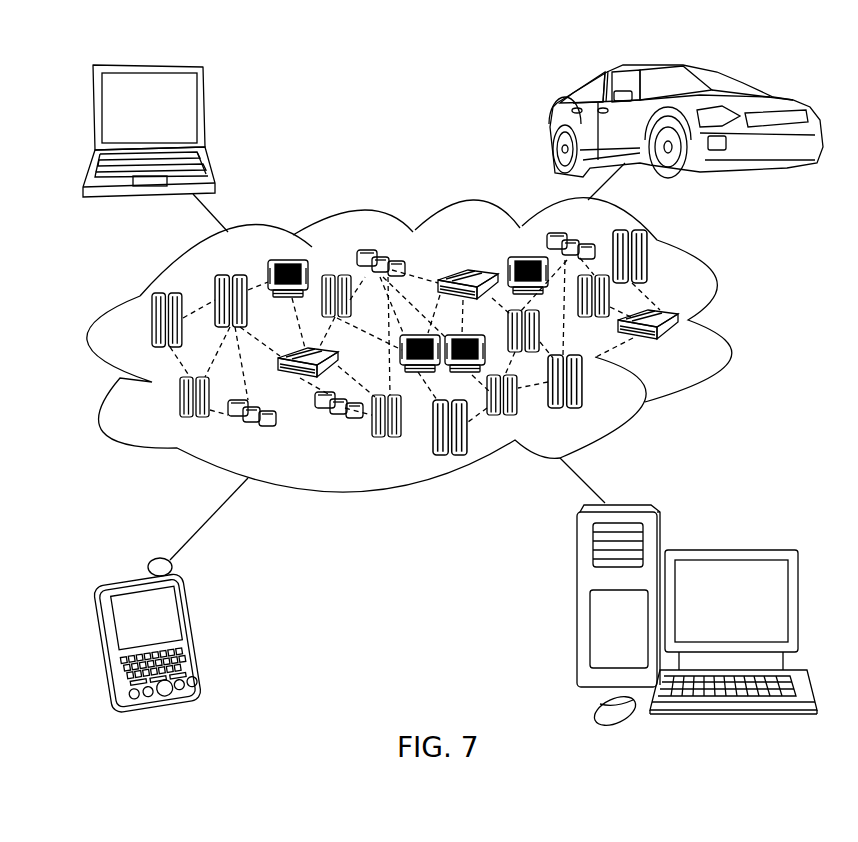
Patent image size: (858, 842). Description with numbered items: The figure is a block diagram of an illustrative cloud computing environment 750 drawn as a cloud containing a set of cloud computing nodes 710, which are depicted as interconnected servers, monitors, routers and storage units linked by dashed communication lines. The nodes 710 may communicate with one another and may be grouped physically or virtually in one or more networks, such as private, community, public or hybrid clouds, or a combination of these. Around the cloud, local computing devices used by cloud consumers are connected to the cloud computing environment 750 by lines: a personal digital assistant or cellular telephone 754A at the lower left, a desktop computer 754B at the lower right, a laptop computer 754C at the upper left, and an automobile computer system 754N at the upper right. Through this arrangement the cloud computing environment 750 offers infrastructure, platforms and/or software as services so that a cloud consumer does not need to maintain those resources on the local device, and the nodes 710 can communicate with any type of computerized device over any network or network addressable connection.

The personal digital assistant (PDA) or cellular telephone 754A is at (192, 635).
The desktop computer 754B is at (697, 618).
The laptop computer 754C is at (186, 131).
The automobile computer system 754N is at (641, 121).
The cloud computing environment 750 is at (443, 345).
The cloud computing nodes 710 is at (471, 342).